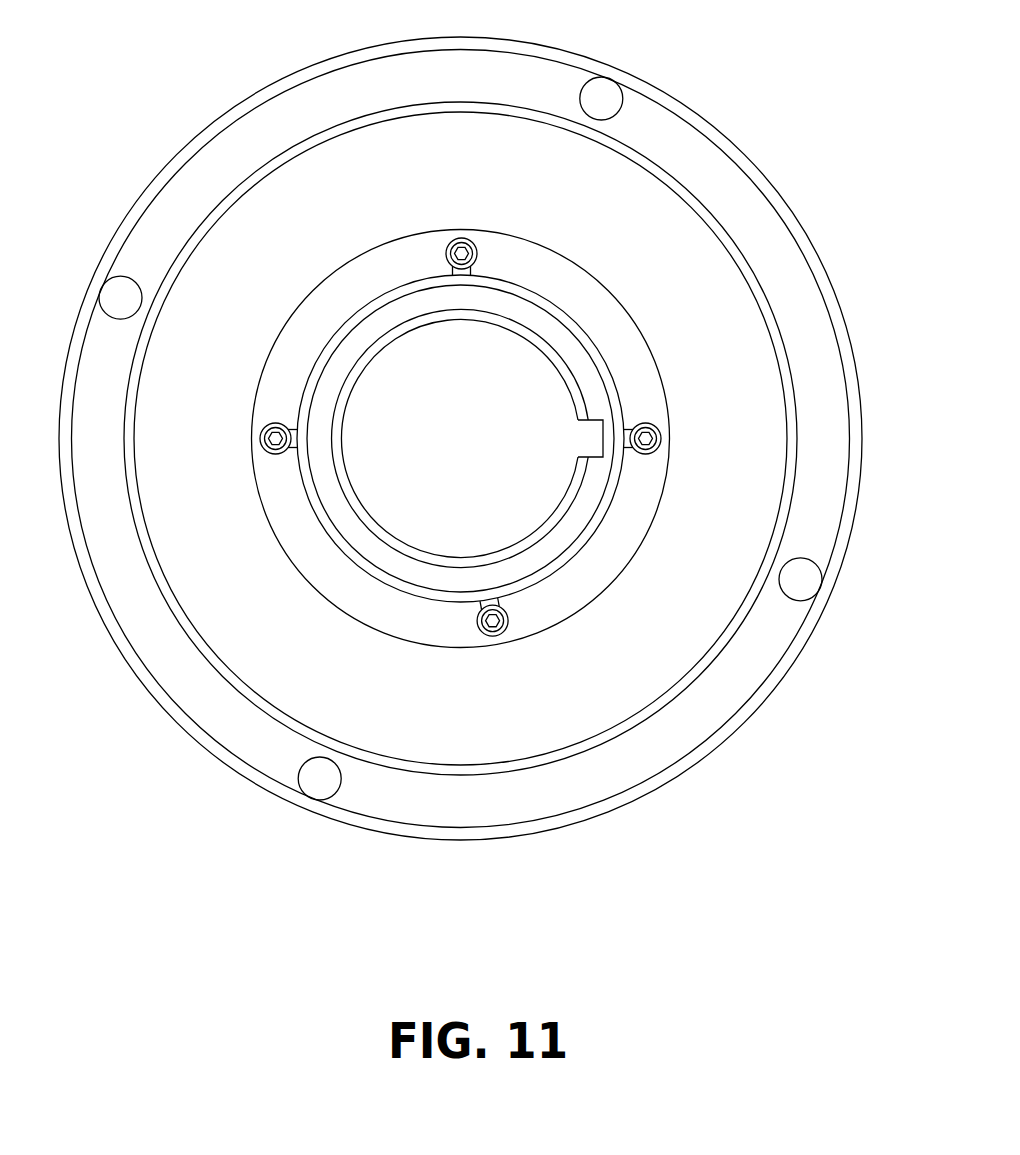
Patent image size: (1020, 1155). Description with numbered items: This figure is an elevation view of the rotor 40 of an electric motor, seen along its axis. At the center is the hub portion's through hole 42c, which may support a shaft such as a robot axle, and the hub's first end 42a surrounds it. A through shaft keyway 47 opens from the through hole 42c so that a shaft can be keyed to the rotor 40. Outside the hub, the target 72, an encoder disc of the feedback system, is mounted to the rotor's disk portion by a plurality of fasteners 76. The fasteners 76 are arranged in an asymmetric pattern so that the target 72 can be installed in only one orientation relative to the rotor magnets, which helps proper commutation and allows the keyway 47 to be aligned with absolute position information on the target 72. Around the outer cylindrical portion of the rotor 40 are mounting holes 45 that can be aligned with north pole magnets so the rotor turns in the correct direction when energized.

The rotor 40 is at (725, 89).
The mounting holes 45 is at (316, 799).
The target 72 is at (707, 320).
The first end 42a is at (570, 528).
The through hole 42c is at (440, 492).
The through shaft keyway 47 is at (591, 420).
The fasteners 76 is at (447, 253).